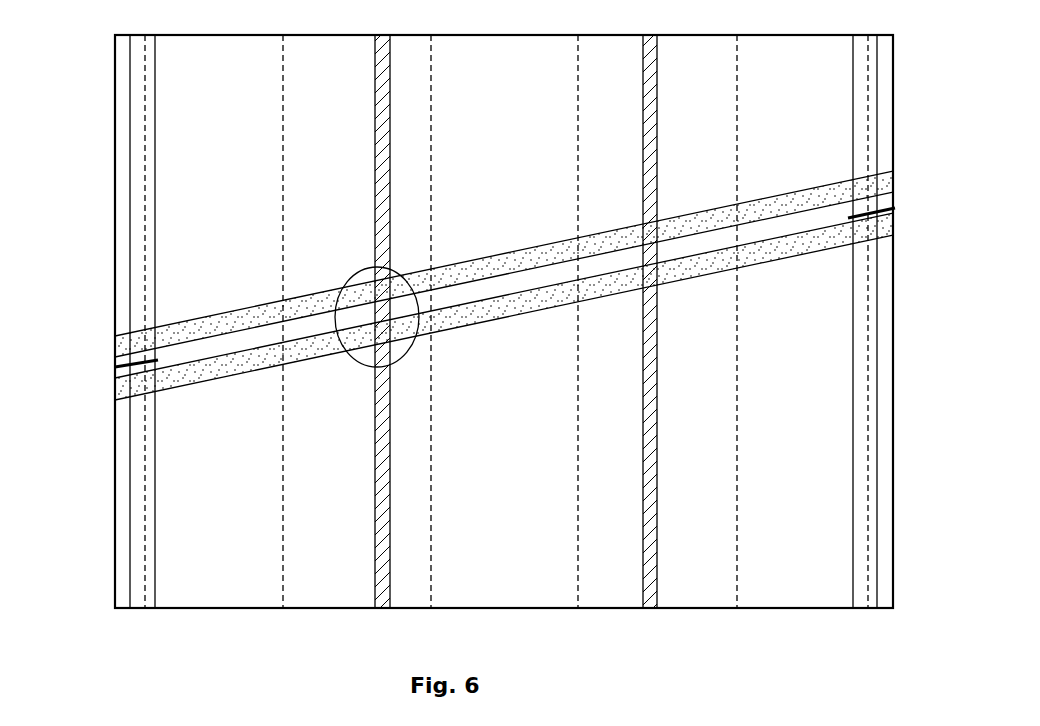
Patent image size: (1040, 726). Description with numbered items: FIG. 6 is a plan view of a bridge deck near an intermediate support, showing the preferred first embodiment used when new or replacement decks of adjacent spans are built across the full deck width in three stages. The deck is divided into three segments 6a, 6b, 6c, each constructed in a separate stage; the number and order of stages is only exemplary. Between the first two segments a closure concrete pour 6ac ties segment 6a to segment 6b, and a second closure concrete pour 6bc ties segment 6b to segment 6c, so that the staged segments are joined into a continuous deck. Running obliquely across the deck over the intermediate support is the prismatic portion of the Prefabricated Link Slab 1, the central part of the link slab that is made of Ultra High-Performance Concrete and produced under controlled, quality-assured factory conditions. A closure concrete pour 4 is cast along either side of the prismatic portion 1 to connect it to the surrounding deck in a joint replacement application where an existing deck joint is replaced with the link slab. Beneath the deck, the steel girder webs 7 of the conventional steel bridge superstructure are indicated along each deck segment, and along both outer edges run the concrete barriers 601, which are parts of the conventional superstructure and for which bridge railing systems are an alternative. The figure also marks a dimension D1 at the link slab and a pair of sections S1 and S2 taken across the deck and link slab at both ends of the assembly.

The prismatic portion of the Prefabricated Link Slab 1 is at (299, 330).
The closure concrete pour 4 is at (212, 321).
The steel girder web 7 is at (148, 58).
The concrete barrier 601 is at (158, 168).
The deck segment 6a is at (265, 321).
The deck segment 6b is at (516, 321).
The deck segment 6c is at (755, 321).
The closure concrete pour 6ac is at (393, 178).
The closure concrete pour 6bc is at (660, 168).
The pipe diameter D1 is at (404, 358).
The first section S1 is at (98, 387).
The second section S2 is at (115, 367).